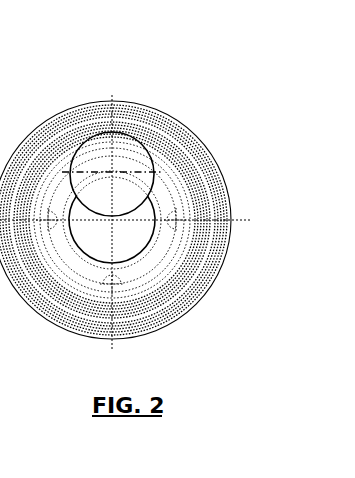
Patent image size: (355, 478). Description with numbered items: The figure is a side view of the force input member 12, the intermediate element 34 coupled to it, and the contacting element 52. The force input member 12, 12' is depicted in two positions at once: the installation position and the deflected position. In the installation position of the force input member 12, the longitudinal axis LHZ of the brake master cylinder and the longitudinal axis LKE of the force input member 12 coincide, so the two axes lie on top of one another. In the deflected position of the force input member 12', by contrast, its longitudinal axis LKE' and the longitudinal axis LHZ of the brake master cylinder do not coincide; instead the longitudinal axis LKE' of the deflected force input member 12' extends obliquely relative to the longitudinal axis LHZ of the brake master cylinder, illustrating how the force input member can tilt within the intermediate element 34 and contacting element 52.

The force input member 12 is at (163, 272).
The force input member 12' is at (93, 127).
The intermediate element 34 is at (115, 189).
The contacting element 52 is at (143, 220).
The longitudinal axis of the force input member LKE' is at (151, 125).
The longitudinal axis of the brake master cylinder LHZ is at (147, 268).
The longitudinal axis of the force input member LKE is at (221, 222).